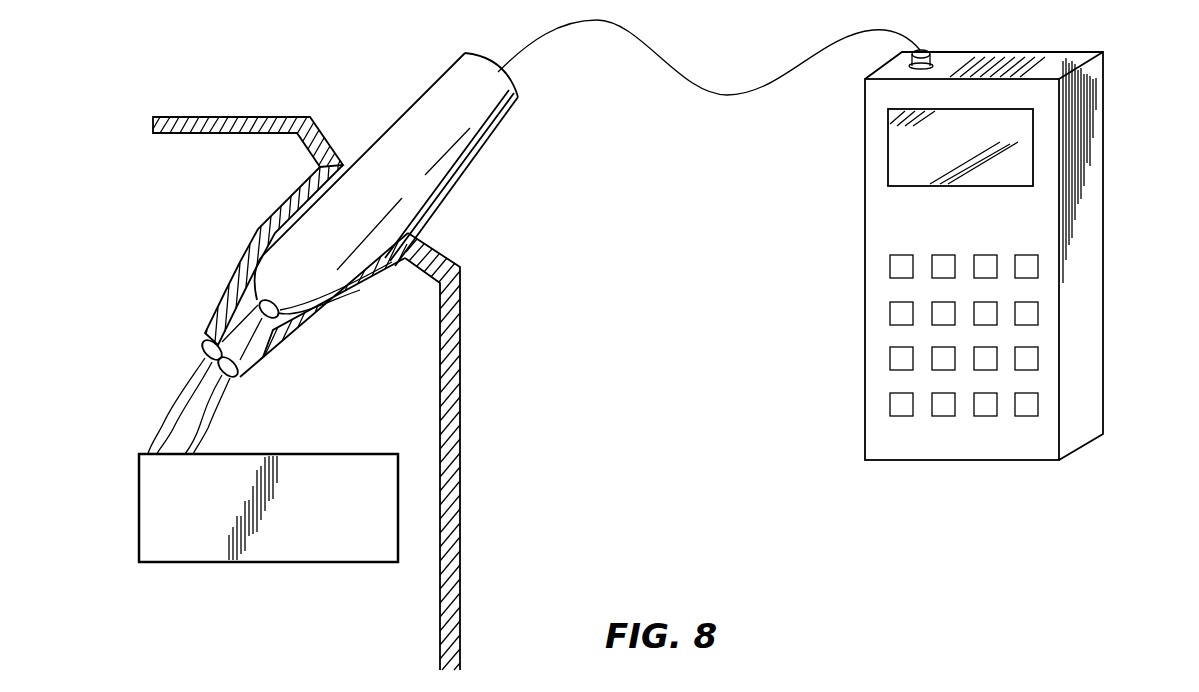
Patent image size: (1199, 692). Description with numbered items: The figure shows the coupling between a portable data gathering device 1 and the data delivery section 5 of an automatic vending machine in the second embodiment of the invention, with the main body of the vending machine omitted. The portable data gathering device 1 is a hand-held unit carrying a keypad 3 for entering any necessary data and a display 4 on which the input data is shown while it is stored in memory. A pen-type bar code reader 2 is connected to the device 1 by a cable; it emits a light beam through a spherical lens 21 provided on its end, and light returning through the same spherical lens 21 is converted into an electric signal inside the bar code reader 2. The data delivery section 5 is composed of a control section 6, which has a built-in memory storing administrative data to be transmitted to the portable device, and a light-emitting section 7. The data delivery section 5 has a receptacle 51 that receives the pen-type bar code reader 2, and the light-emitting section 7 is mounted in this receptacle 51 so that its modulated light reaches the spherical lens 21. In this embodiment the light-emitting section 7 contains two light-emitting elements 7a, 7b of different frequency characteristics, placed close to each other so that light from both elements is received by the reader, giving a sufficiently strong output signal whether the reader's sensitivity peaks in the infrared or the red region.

The portable data gathering device 1 is at (974, 276).
The pen-type bar code reader 2 is at (460, 62).
The spherical lens 21 is at (207, 320).
The keypad 3 is at (987, 412).
The display 4 is at (1028, 110).
The data delivery section 5 is at (281, 460).
The receptacle 51 is at (340, 313).
The control section 6 is at (392, 537).
The light-emitting section 7 is at (222, 383).
The light-emitting element 7a is at (203, 355).
The light-emitting element 7b is at (185, 378).